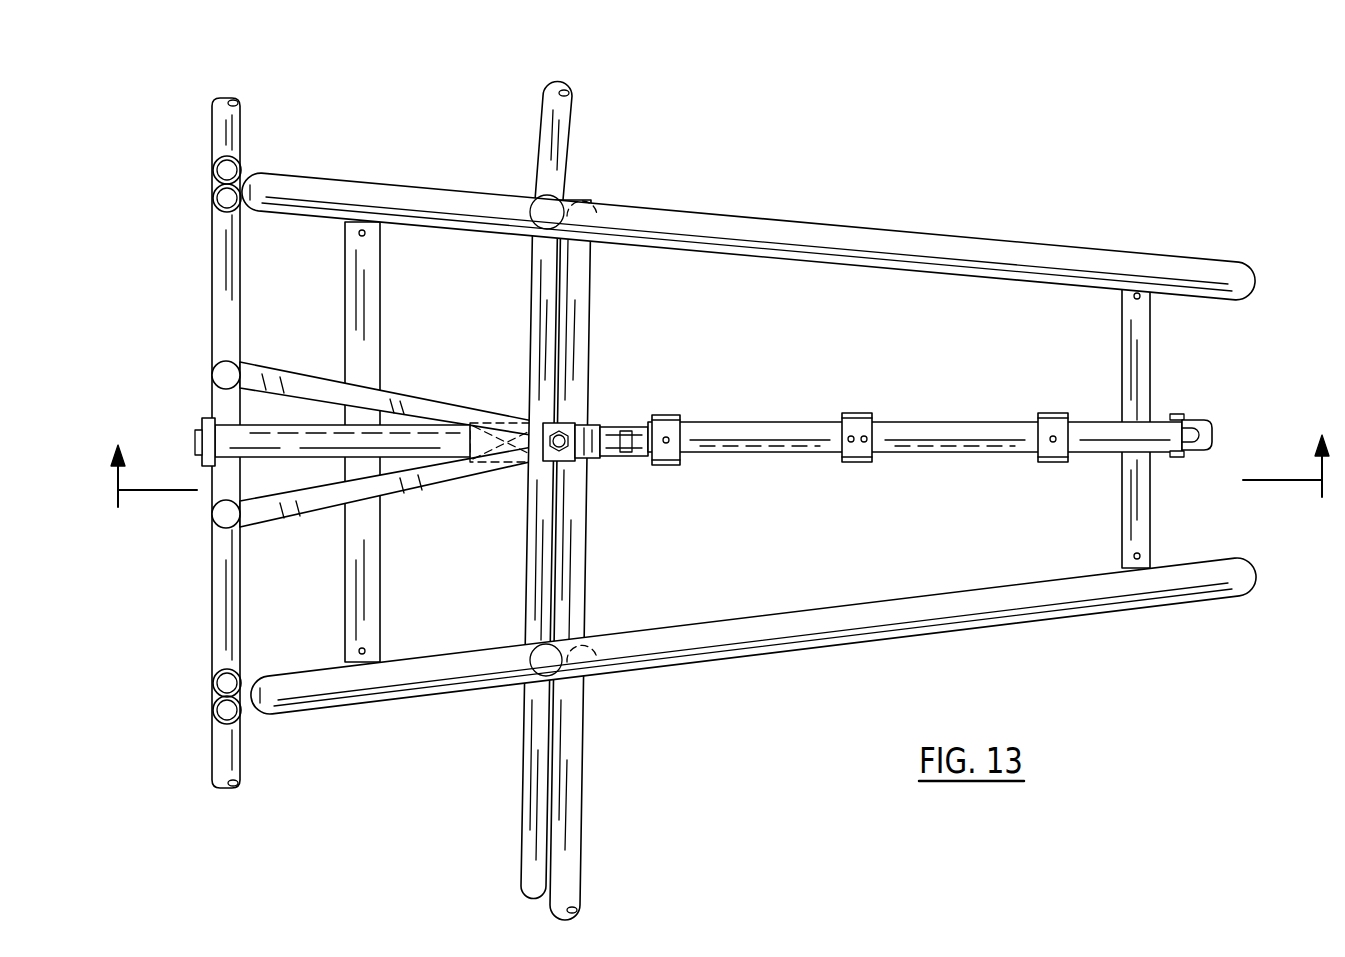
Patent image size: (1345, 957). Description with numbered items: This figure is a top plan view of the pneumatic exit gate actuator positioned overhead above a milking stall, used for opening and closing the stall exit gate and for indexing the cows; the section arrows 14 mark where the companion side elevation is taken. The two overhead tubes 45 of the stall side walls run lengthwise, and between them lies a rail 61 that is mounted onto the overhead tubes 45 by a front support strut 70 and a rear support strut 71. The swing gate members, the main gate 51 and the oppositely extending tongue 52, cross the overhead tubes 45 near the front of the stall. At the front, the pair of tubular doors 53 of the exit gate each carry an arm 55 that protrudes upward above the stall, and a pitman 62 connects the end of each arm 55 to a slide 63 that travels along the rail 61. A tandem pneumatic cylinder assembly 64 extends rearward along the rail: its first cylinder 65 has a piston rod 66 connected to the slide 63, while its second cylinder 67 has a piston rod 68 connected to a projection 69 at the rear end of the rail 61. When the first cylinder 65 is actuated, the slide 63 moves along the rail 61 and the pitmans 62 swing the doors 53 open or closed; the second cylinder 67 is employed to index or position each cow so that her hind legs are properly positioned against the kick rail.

The section line of FIG. 14 is at (718, 455).
The overhead tube 45 is at (796, 216).
The main gate 51 is at (570, 128).
The tongue 52 is at (525, 343).
The door 53 is at (235, 285).
The arm 55 is at (221, 366).
The rail 61 is at (235, 427).
The pitman 62 is at (280, 377).
The slide 63 is at (595, 458).
The tandem pneumatic cylinder assembly 64 is at (915, 416).
The first cylinder 65 is at (810, 420).
The piston rod 66 is at (645, 458).
The second cylinder 67 is at (985, 428).
The piston rod 68 is at (1064, 465).
The projection 69 is at (1195, 428).
The support strut 70 is at (387, 442).
The support strut 71 is at (1145, 518).